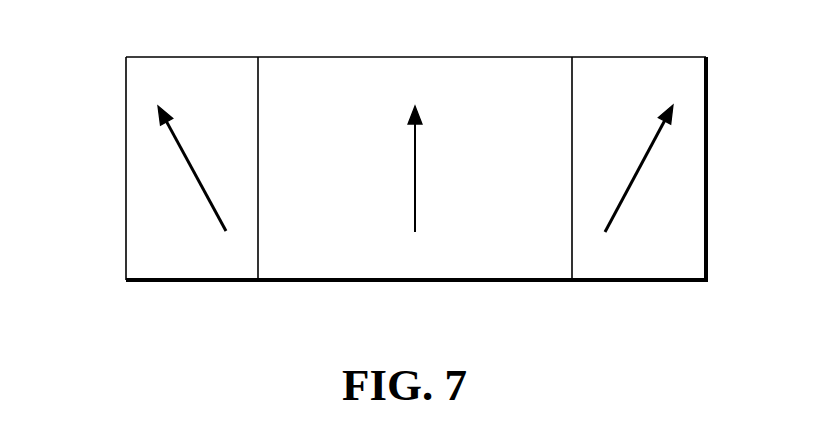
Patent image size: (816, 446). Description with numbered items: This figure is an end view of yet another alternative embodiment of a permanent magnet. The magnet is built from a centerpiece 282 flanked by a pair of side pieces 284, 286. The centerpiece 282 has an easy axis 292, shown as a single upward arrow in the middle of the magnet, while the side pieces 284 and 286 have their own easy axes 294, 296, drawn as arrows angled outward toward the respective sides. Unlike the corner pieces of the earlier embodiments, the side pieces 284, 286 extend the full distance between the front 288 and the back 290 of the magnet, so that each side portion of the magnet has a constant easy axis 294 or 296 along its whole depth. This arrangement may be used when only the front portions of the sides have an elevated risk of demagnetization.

The centerpiece 282 is at (480, 67).
The side piece 284 is at (193, 67).
The side piece 286 is at (637, 65).
The front 288 is at (230, 56).
The back 290 is at (291, 282).
The easy axis 292 is at (415, 199).
The easy axis 294 is at (208, 193).
The easy axis 296 is at (625, 193).